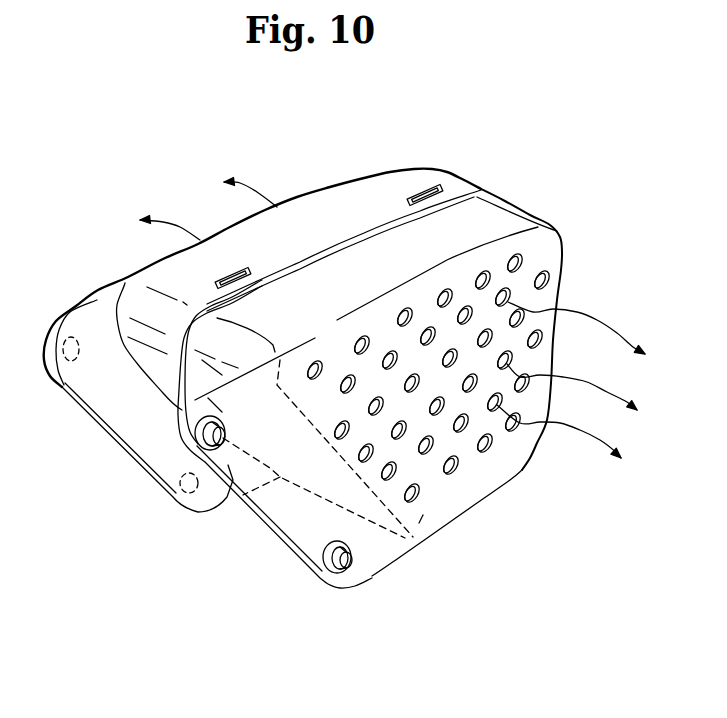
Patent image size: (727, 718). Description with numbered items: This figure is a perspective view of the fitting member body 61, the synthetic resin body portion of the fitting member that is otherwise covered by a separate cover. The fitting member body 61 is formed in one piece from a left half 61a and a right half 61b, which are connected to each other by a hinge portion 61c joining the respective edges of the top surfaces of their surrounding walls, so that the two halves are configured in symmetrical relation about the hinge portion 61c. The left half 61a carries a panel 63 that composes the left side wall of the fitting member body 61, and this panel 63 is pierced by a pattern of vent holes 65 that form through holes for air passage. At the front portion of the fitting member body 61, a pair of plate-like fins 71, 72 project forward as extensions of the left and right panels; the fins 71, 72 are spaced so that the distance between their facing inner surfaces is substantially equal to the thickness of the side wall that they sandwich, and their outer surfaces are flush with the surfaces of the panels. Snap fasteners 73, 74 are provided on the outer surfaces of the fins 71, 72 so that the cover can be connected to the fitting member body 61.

The fitting member body 61 is at (329, 172).
The left half 61a is at (497, 220).
The right half 61b is at (242, 246).
The hinge portion 61c is at (481, 187).
The panel 63 is at (423, 515).
The vent holes 65 is at (511, 300).
The fin 71 is at (283, 515).
The fin 72 is at (115, 408).
The snap fastener 73 is at (217, 450).
The snap fastener 74 is at (68, 362).